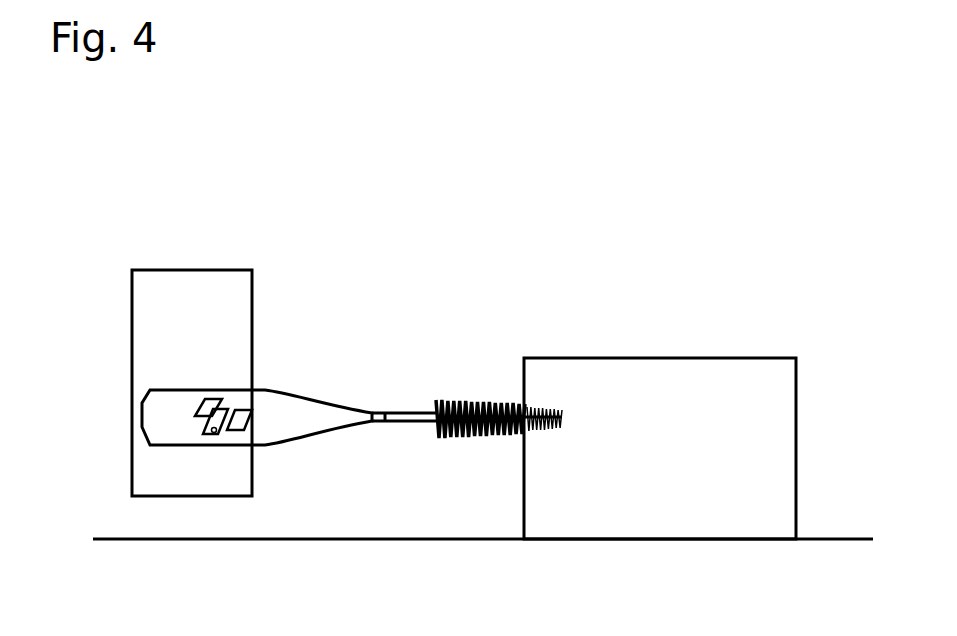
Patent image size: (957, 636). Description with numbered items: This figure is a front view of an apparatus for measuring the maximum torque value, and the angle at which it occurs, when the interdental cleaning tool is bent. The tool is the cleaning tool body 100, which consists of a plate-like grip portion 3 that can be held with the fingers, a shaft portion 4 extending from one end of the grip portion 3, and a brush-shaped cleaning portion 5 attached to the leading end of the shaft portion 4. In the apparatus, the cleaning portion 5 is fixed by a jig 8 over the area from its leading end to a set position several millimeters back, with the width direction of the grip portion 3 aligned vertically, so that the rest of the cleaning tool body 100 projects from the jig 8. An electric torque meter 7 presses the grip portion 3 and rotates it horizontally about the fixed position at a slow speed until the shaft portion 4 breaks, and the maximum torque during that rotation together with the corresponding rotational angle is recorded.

The cleaning tool body 100 is at (364, 318).
The grip portion 3 is at (263, 392).
The shaft portion 4 is at (390, 405).
The cleaning portion 5 is at (453, 398).
The electric torque meter 7 is at (173, 282).
The jig 8 is at (640, 378).